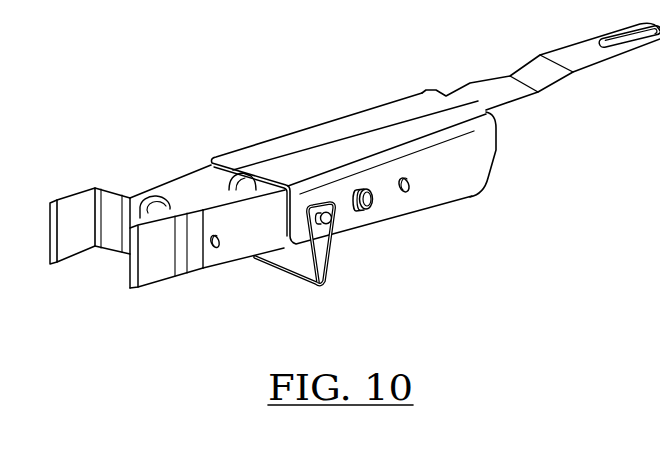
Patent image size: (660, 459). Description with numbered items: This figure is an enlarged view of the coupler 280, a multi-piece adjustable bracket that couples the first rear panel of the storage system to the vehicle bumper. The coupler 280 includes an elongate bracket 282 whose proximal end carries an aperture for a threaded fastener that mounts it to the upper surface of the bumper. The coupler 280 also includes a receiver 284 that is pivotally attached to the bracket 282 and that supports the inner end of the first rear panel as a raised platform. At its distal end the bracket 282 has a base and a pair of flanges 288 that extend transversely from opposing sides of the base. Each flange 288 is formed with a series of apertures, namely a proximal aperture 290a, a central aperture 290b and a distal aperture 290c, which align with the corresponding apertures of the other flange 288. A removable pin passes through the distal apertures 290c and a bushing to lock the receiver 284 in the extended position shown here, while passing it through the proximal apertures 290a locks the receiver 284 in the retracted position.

The coupler 280 is at (307, 50).
The bracket 282 is at (480, 80).
The receiver 284 is at (123, 169).
The flange 288 is at (462, 178).
The proximal aperture 290a is at (405, 193).
The central aperture 290b is at (357, 186).
The distal aperture 290c is at (305, 212).